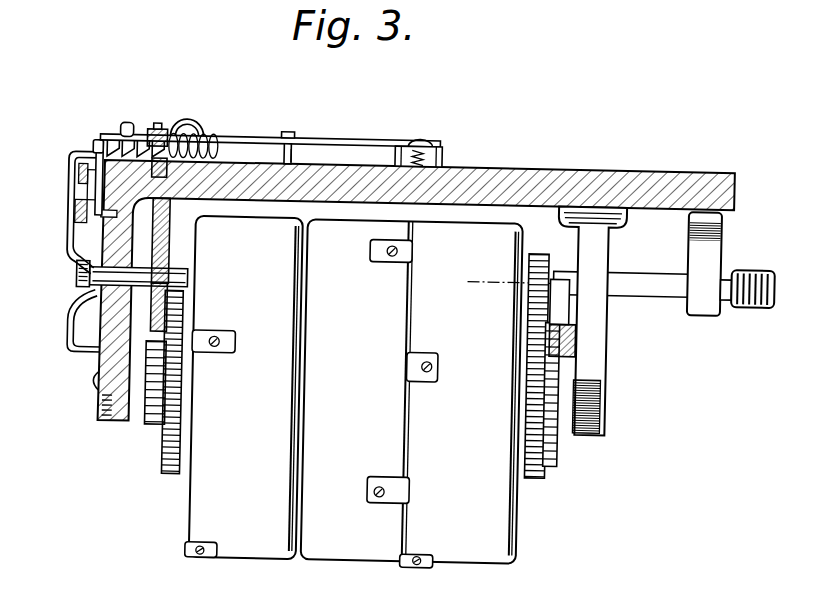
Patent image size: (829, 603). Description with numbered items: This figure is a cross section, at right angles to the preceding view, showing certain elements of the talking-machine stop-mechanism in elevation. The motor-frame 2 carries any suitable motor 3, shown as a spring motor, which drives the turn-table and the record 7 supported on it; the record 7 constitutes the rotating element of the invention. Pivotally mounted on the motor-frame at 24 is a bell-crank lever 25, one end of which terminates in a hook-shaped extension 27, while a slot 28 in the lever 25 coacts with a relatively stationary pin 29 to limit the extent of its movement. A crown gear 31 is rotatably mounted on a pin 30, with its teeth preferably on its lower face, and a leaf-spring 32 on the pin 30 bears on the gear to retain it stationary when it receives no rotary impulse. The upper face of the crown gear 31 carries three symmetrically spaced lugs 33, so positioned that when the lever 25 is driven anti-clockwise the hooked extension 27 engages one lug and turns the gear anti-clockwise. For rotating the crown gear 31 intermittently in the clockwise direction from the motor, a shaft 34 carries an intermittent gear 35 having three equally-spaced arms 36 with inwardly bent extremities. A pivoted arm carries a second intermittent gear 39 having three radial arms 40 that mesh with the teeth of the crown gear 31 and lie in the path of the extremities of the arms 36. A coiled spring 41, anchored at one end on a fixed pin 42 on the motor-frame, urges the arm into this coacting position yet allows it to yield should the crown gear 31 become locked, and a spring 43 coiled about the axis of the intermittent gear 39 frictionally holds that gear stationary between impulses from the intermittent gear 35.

The motor-frame 2 is at (520, 164).
The motor 3 is at (507, 494).
The record 7 is at (531, 339).
The pivot 24 is at (424, 131).
The bell-crank lever 25 is at (356, 137).
The hook-shaped extension 27 is at (132, 113).
The slot 28 is at (294, 136).
The pin 29 is at (293, 151).
The pin 30 is at (157, 122).
The crown gear 31 is at (206, 133).
The leaf-spring 32 is at (191, 122).
The lugs 33 is at (162, 127).
The shaft 34 is at (179, 270).
The intermittent gear 35 is at (88, 287).
The arms 36 is at (76, 338).
The intermittent gear 39 is at (97, 150).
The radial arms 40 is at (98, 143).
The spring 41 is at (98, 220).
The pin 42 is at (80, 190).
The spring 43 is at (80, 169).